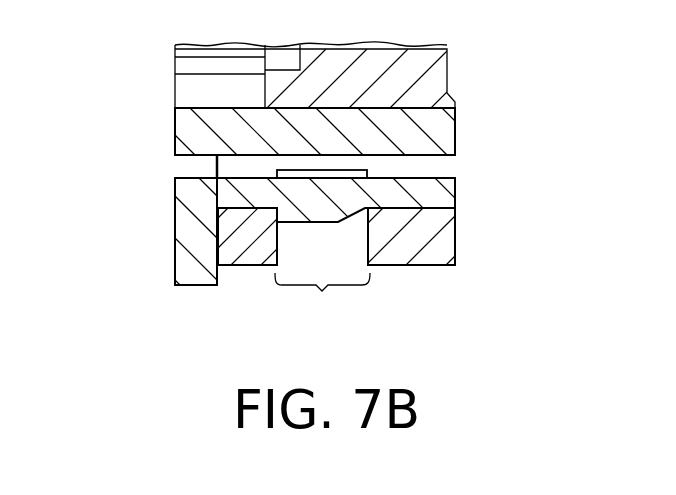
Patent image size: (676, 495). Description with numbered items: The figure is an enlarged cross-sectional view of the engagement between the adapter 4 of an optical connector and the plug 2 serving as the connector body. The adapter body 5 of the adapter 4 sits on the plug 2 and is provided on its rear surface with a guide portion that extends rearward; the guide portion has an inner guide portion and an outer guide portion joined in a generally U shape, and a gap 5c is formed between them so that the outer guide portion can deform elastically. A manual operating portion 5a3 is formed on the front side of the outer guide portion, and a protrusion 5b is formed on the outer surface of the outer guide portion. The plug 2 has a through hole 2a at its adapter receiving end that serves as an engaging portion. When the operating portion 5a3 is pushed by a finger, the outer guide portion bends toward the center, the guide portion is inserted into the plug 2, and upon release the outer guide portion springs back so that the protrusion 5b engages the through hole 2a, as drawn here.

The adapter 4 is at (153, 125).
The adapter body 5 is at (173, 143).
The gap 5c is at (185, 166).
The manual operating portion 5a3 is at (177, 222).
The protrusion 5b is at (337, 203).
The plug 2 is at (413, 268).
The through hole 2a is at (322, 301).